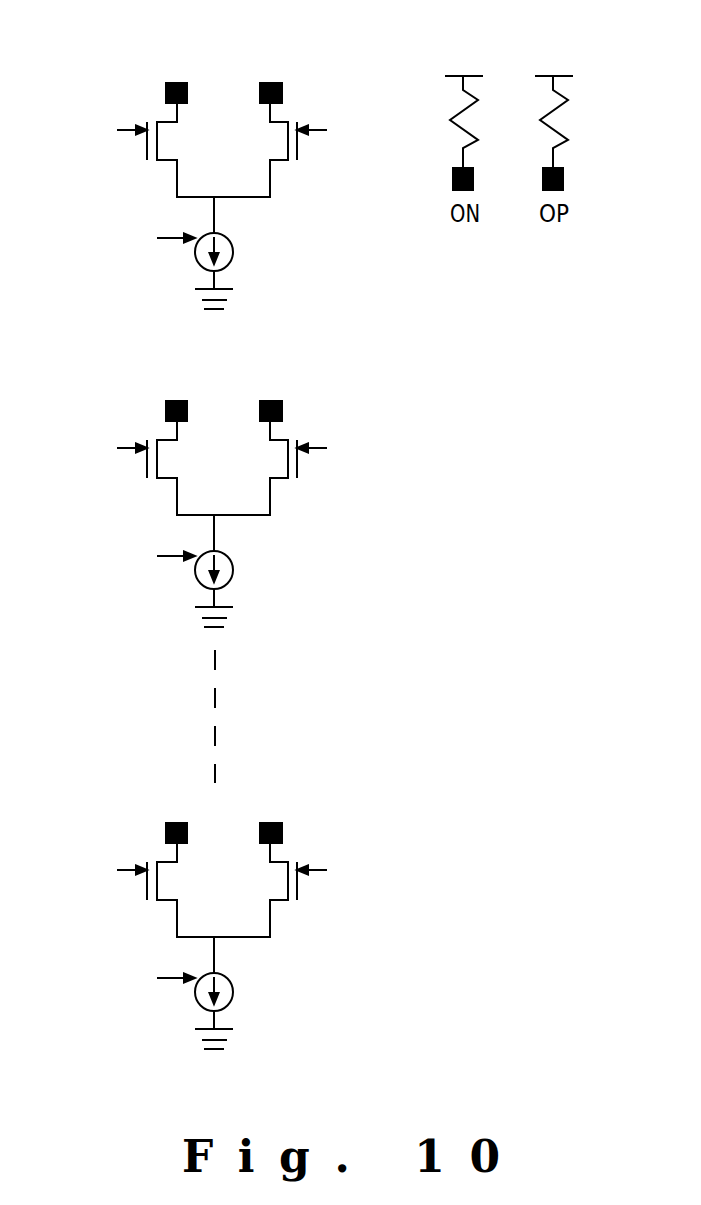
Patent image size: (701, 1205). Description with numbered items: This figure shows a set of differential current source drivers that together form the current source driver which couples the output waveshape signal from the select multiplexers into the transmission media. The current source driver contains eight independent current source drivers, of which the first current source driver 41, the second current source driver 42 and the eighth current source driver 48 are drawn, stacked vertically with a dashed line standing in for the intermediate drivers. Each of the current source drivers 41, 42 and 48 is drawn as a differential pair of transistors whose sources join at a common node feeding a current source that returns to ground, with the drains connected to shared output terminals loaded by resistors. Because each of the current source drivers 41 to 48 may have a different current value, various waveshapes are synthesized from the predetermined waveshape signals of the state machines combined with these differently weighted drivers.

The current source driver 41 is at (307, 95).
The current source driver 42 is at (223, 465).
The current source driver 48 is at (223, 886).